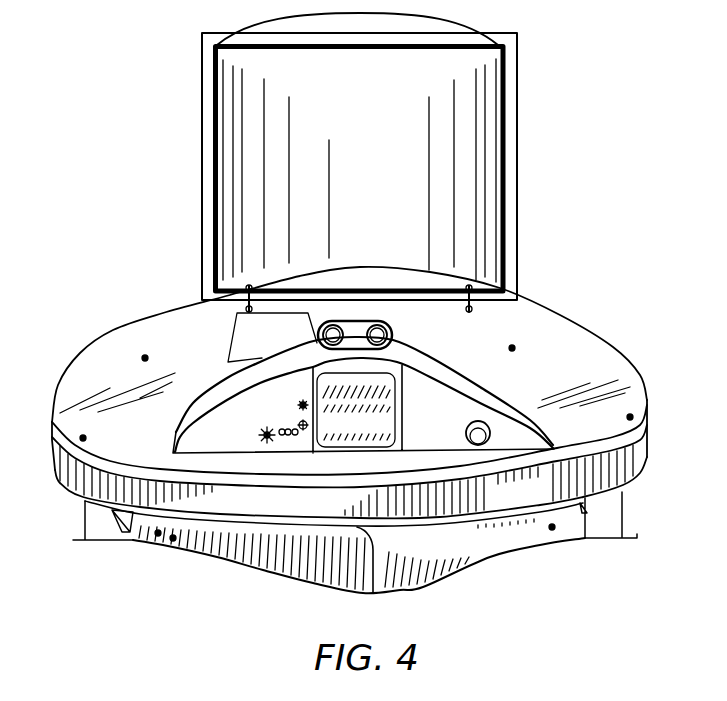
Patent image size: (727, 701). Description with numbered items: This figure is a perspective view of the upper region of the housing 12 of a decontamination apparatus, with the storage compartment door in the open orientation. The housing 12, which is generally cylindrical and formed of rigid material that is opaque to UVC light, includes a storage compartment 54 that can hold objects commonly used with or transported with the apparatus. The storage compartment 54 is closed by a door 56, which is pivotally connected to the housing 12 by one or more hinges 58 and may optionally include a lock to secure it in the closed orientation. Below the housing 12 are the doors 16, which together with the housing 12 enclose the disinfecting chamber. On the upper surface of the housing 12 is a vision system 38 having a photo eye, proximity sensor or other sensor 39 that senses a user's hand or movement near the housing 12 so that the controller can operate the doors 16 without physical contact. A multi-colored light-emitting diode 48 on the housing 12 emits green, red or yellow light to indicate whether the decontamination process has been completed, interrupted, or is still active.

The housing 12 is at (647, 395).
The doors 16 is at (217, 543).
The vision system 38 is at (404, 333).
The sensor 39 is at (318, 320).
The multi-colored light-emitting diode 48 is at (303, 405).
The storage compartment 54 is at (428, 282).
The door 56 is at (517, 132).
The hinges 58 is at (472, 306).